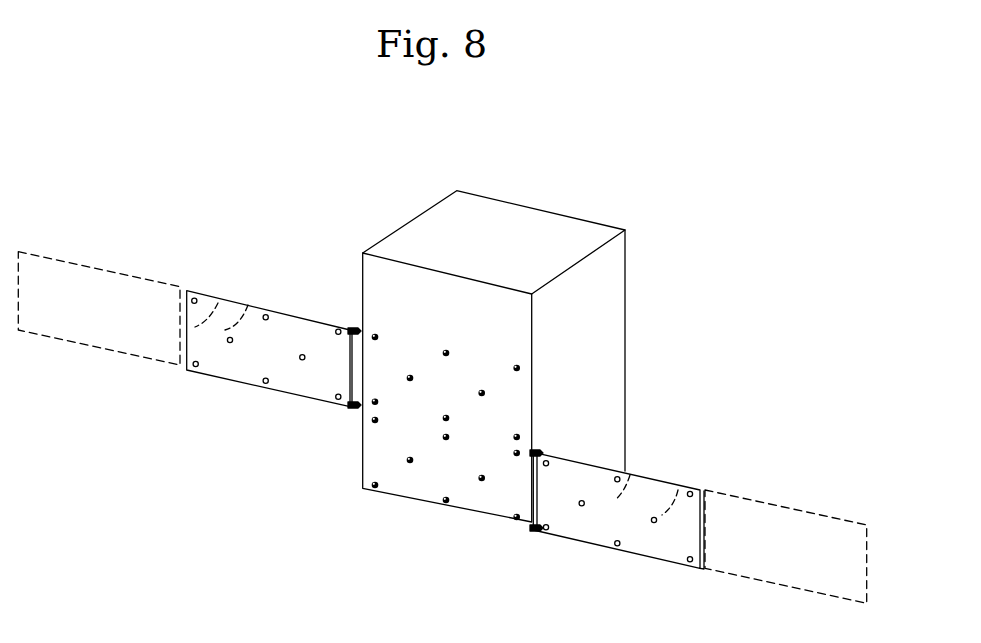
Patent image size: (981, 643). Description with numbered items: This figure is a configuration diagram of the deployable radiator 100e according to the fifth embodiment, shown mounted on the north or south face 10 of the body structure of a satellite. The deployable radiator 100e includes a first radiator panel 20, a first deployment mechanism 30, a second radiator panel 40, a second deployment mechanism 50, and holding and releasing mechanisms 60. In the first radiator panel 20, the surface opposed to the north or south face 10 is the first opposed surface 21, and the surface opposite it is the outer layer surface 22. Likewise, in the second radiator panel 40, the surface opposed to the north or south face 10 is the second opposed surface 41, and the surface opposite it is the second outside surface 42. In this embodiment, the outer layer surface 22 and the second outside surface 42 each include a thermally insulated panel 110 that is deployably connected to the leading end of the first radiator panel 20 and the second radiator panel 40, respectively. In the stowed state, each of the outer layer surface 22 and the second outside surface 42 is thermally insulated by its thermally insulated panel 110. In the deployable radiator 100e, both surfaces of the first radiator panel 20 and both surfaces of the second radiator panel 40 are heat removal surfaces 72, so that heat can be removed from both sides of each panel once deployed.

The deployable radiator 100e is at (791, 202).
The north or south face 10 is at (415, 297).
The first radiator panel 20 is at (628, 470).
The first opposed surface 21 is at (662, 542).
The outer layer surface 22 is at (631, 475).
The first deployment mechanism 30 is at (530, 457).
The second radiator panel 40 is at (333, 387).
The second opposed surface 41 is at (220, 358).
The second outside surface 42 is at (218, 303).
The second deployment mechanism 50 is at (349, 403).
The holding and releasing mechanisms 60 is at (447, 352).
The heat removal surfaces 72 is at (248, 305).
The thermally insulated panel 110 is at (95, 285).